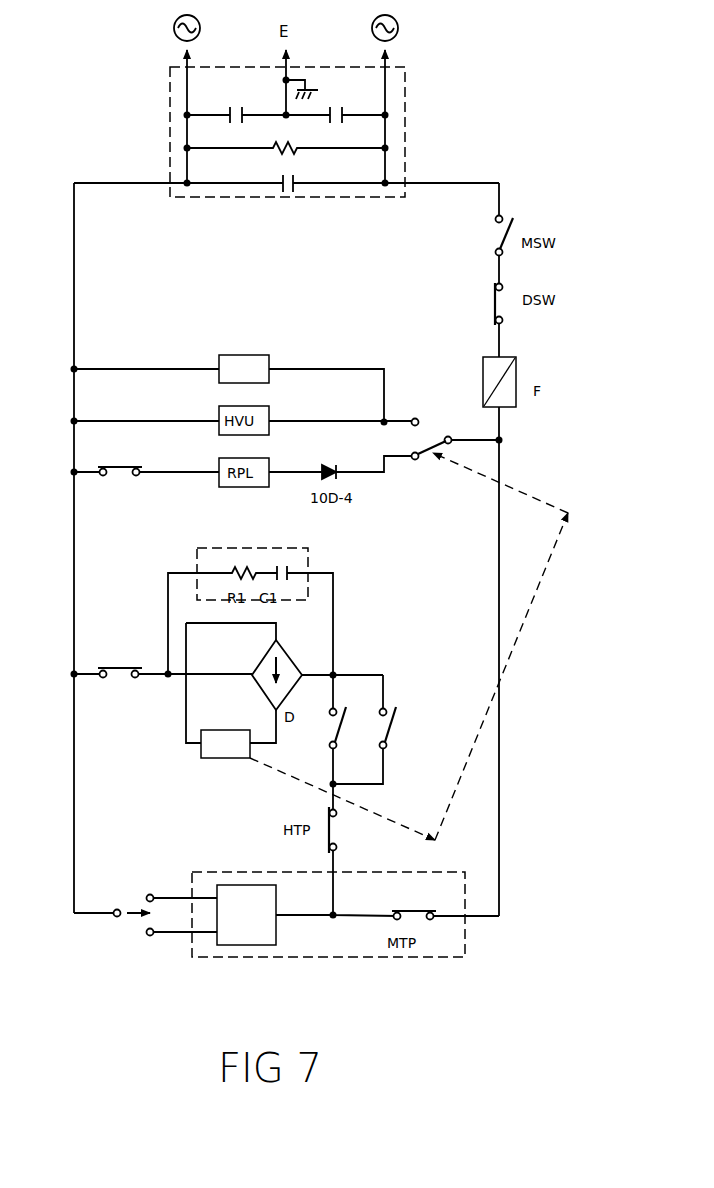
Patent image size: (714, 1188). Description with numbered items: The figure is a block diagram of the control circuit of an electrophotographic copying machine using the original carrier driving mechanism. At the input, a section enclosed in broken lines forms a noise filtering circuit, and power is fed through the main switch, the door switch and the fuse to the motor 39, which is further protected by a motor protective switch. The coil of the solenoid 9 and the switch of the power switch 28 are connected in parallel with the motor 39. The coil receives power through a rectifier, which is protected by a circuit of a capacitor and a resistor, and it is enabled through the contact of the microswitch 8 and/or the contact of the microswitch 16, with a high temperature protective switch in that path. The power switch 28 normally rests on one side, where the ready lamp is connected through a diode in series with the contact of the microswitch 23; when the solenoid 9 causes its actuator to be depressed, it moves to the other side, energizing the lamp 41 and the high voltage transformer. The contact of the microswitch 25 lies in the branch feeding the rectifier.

The lamp 41 is at (245, 354).
The microswitch 23 is at (121, 476).
The power switch 28 is at (430, 437).
The microswitch 25 is at (112, 661).
The microswitch 16 is at (336, 729).
The microswitch 8 is at (393, 725).
The solenoid 9 is at (205, 757).
The motor 39 is at (238, 946).